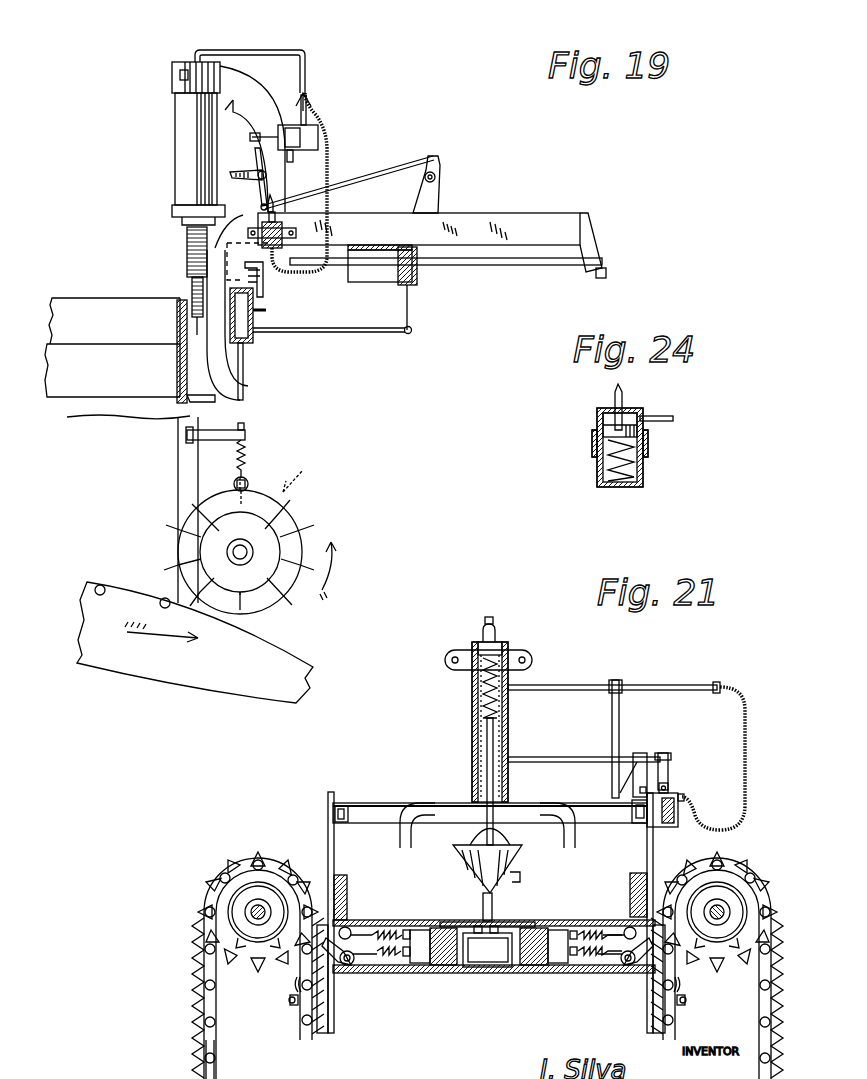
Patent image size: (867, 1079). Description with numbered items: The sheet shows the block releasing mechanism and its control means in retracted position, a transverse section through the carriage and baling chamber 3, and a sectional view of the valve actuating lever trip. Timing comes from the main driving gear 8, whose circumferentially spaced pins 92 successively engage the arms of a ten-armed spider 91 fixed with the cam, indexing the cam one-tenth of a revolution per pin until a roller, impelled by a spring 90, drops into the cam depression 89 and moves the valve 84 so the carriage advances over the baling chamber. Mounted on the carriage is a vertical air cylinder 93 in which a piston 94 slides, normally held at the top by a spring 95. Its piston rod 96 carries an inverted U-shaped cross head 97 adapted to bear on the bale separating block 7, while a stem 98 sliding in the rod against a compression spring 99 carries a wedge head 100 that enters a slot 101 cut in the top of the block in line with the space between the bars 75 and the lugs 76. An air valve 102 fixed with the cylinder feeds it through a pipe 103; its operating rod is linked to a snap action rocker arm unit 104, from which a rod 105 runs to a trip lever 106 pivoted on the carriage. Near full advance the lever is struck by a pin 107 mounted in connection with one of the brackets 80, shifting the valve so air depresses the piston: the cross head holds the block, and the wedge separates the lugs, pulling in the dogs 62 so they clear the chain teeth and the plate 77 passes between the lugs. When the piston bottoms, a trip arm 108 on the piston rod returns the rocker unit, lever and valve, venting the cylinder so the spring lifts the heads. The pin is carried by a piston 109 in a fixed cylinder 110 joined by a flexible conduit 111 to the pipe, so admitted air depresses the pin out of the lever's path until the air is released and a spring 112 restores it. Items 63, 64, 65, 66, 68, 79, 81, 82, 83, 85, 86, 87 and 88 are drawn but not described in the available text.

In FIG. 19, the baling chamber 3 is at (158, 483).
In FIG. 21, the baling chamber 3 is at (360, 910).
In FIG. 19, the bale separating block 7 is at (80, 363).
In FIG. 21, the bale separating block 7 is at (545, 952).
In FIG. 19, the main driving gear 8 is at (283, 685).
In FIG. 21, the dogs 62 is at (353, 973).
In FIG. 21, the guide bar 63 is at (327, 1023).
In FIG. 21, the pin 64 is at (303, 1012).
In FIG. 21, the chain guard 65 is at (322, 1033).
In FIG. 21, the hook 66 is at (297, 982).
In FIG. 21, the sprocket 68 is at (242, 928).
In FIG. 21, the bars 75 is at (443, 972).
In FIG. 21, the lugs 76 is at (493, 929).
In FIG. 21, the plate 77 is at (505, 958).
In FIG. 21, the springs 79 is at (592, 945).
In FIG. 19, the bracket 80 is at (473, 233).
In FIG. 21, the bracket 80 is at (328, 827).
In FIG. 19, the bracket 81 is at (582, 222).
In FIG. 21, the bracket 81 is at (360, 817).
In FIG. 19, the housing 82 is at (352, 272).
In FIG. 19, the fitting 83 is at (416, 270).
In FIG. 19, the valve 84 is at (254, 332).
In FIG. 19, the bracket 85 is at (267, 285).
In FIG. 19, the rod 86 is at (245, 388).
In FIG. 19, the clamp 87 is at (248, 482).
In FIG. 19, the disc 88 is at (283, 527).
In FIG. 19, the depression 89 is at (285, 505).
In FIG. 19, the spring 90 is at (246, 447).
In FIG. 19, the ten-armed spider 91 is at (288, 610).
In FIG. 19, the pins 92 is at (162, 598).
In FIG. 19, the air cylinder 93 is at (183, 188).
In FIG. 21, the air cylinder 93 is at (472, 723).
In FIG. 21, the piston 94 is at (488, 650).
In FIG. 21, the spring 95 is at (512, 687).
In FIG. 21, the piston rod 96 is at (495, 735).
In FIG. 19, the cross head 97 is at (187, 262).
In FIG. 21, the cross head 97 is at (400, 842).
In FIG. 21, the stem 98 is at (480, 847).
In FIG. 21, the compression spring 99 is at (478, 697).
In FIG. 19, the wedge head 100 is at (192, 303).
In FIG. 21, the wedge head 100 is at (492, 868).
In FIG. 21, the slot 101 is at (507, 922).
In FIG. 19, the air valve 102 is at (305, 137).
In FIG. 19, the pipe 103 is at (267, 50).
In FIG. 19, the snap action rocker arm unit 104 is at (232, 173).
In FIG. 19, the rod 105 is at (370, 168).
In FIG. 19, the trip lever 106 is at (413, 203).
In FIG. 21, the trip lever 106 is at (670, 765).
In FIG. 19, the pin 107 is at (274, 208).
In FIG. 24, the pin 107 is at (623, 398).
In FIG. 21, the pin 107 is at (669, 786).
In FIG. 19, the trip arm 108 is at (226, 110).
In FIG. 24, the piston 109 is at (612, 427).
In FIG. 19, the cylinder 110 is at (280, 242).
In FIG. 24, the cylinder 110 is at (600, 482).
In FIG. 21, the cylinder 110 is at (660, 828).
In FIG. 19, the flexible conduit 111 is at (330, 150).
In FIG. 24, the flexible conduit 111 is at (673, 418).
In FIG. 21, the flexible conduit 111 is at (745, 728).
In FIG. 24, the spring 112 is at (648, 450).